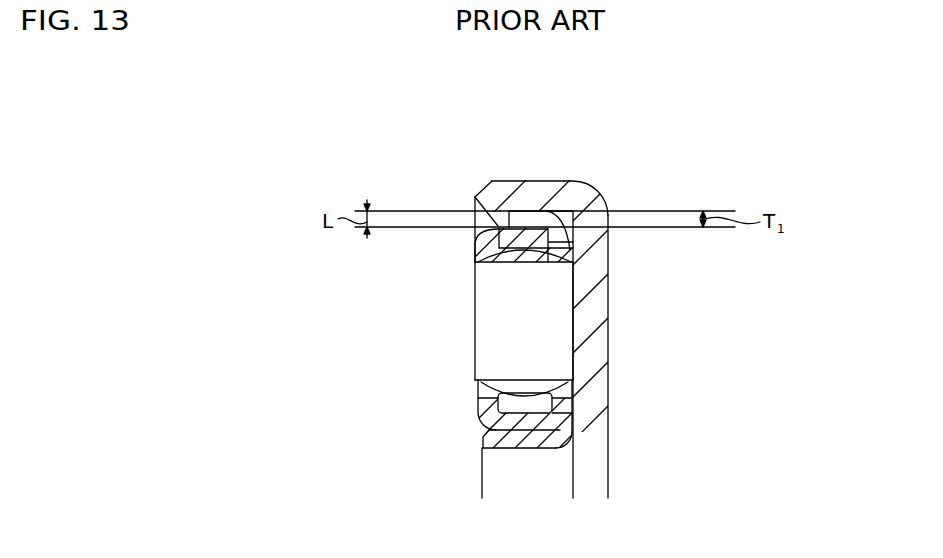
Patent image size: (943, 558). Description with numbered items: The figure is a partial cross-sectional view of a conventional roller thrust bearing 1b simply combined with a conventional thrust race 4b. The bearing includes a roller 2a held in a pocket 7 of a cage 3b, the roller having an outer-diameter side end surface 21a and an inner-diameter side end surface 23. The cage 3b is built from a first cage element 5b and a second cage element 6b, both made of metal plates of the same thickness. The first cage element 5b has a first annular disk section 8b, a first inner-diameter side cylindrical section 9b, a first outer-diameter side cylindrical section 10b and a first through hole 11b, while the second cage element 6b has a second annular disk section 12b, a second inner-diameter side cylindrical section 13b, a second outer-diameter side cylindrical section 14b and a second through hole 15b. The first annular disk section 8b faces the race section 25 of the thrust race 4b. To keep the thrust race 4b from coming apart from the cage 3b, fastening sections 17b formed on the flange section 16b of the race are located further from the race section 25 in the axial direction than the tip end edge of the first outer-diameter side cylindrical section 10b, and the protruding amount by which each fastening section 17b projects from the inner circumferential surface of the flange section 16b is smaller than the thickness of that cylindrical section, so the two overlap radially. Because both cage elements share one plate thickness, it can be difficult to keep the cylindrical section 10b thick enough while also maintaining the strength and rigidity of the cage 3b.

The roller thrust bearing 1b is at (422, 368).
The roller 2a is at (492, 330).
The cage 3b is at (545, 455).
The thrust race 4b is at (611, 355).
The first cage element 5b is at (572, 242).
The second cage element 6b is at (487, 247).
The pocket 7 is at (576, 404).
The first annular disk section 8b is at (574, 422).
The first inner-diameter side cylindrical section 9b is at (518, 450).
The first outer-diameter side cylindrical section 10b is at (542, 215).
The first through hole 11b is at (572, 270).
The second annular disk section 12b is at (487, 434).
The second inner-diameter side cylindrical section 13b is at (486, 438).
The second outer-diameter side cylindrical section 14b is at (520, 228).
The second through hole 15b is at (494, 403).
The flange section 16b is at (555, 190).
The fastening section 17b is at (492, 200).
The outer-diameter side end surface 21a is at (474, 266).
The inner-diameter side end surface 23 is at (577, 390).
The race section 25 is at (598, 325).